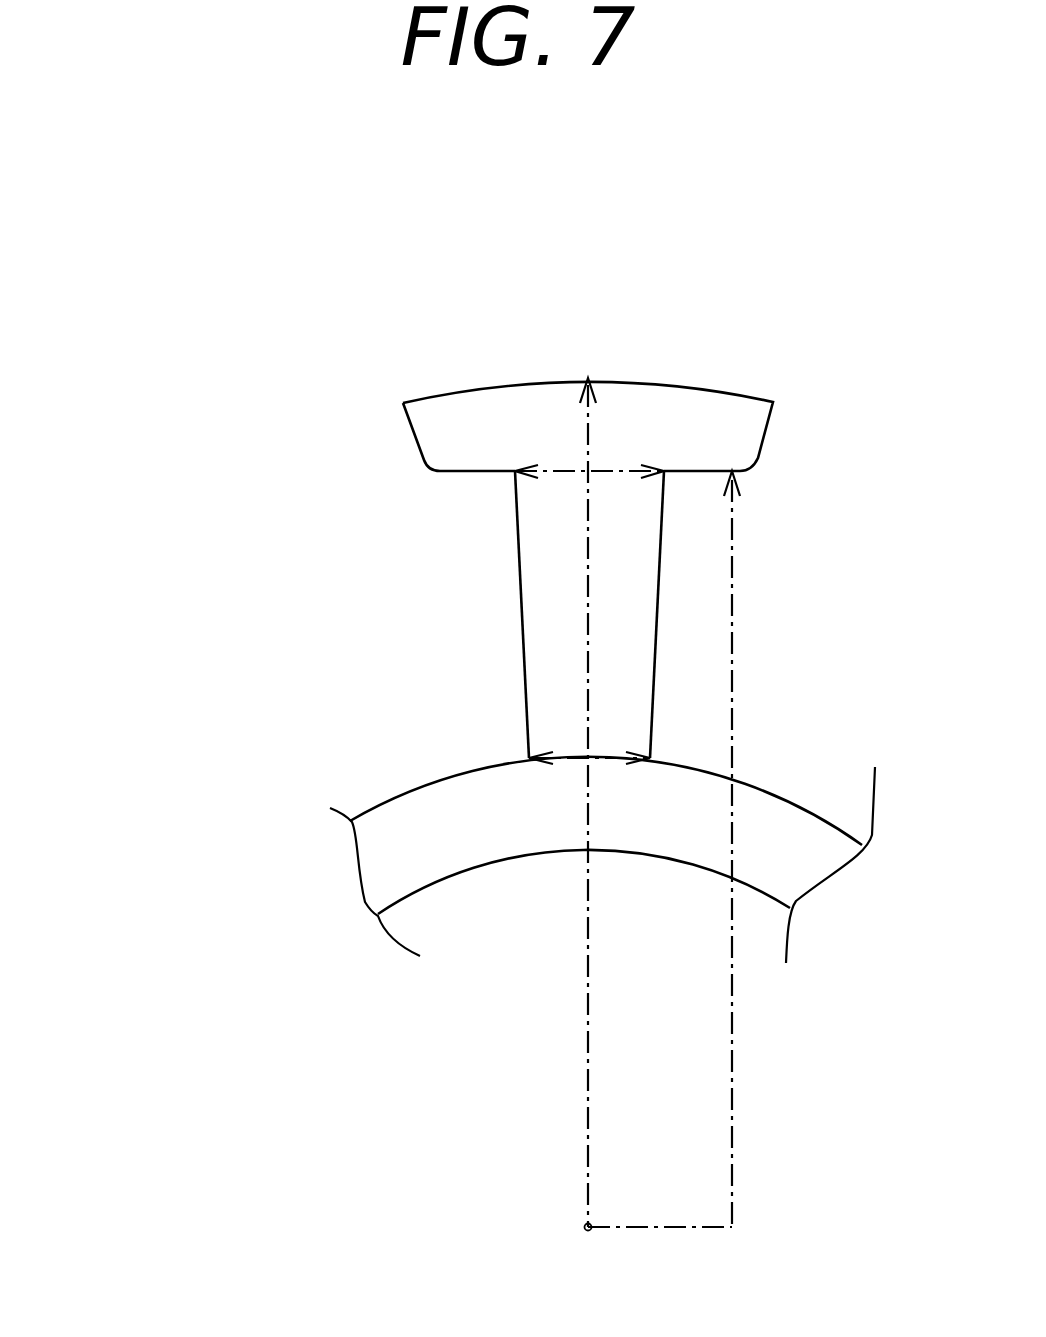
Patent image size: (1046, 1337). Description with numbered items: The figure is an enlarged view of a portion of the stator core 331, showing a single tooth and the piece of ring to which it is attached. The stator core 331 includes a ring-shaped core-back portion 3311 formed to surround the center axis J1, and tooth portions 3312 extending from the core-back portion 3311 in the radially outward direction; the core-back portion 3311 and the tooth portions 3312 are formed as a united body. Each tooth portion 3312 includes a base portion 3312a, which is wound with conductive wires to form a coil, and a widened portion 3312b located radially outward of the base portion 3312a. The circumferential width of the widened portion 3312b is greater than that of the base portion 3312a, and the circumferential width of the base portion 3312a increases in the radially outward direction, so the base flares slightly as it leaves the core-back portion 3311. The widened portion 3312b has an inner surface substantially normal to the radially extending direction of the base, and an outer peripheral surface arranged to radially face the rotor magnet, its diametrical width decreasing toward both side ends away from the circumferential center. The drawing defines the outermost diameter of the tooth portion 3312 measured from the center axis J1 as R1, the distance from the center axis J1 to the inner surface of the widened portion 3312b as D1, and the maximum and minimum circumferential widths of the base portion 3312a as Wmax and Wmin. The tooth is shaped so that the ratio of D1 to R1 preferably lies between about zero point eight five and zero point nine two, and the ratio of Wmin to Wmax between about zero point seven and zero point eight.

The stator core 331 is at (460, 672).
The core-back portion 3311 is at (468, 797).
The tooth portion 3312 is at (409, 570).
The base portion 3312a is at (213, 453).
The widened portion 3312b is at (447, 453).
The maximum circumferential width of the base portion Wmax is at (610, 468).
The minimum circumferential width of the base portion Wmin is at (608, 760).
The distance from center axis to inner surface of widened portion D1 is at (735, 733).
The outermost diameter of the tooth portion R1 is at (588, 1008).
The center axis J1 is at (583, 1229).